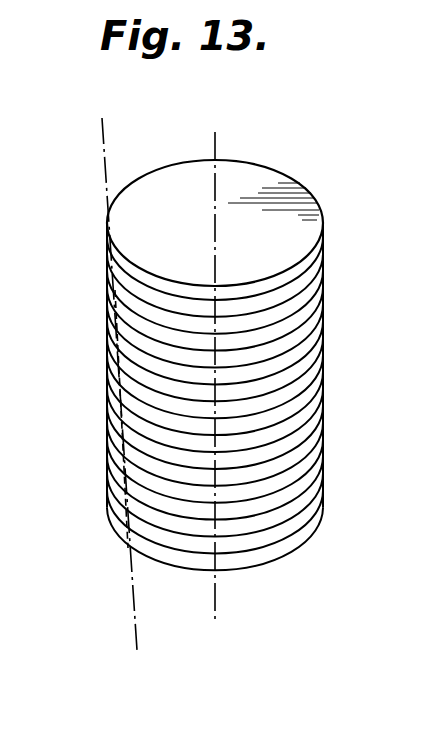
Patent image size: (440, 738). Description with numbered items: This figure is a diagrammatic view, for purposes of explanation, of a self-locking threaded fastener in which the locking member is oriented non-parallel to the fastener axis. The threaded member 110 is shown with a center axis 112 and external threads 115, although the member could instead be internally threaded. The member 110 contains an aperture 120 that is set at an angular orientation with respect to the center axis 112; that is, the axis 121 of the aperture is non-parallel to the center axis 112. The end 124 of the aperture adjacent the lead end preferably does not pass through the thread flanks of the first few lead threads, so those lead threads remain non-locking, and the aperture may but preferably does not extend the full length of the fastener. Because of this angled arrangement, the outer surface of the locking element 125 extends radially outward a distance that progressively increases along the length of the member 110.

The threaded member 110 is at (291, 228).
The center axis 112 is at (215, 137).
The external threads 115 is at (306, 380).
The aperture 120 is at (122, 440).
The axis of the aperture 121 is at (135, 628).
The end of the aperture 124 is at (128, 548).
The locking element 125 is at (120, 358).